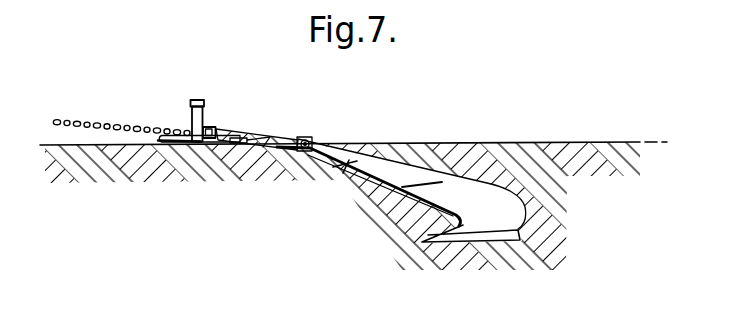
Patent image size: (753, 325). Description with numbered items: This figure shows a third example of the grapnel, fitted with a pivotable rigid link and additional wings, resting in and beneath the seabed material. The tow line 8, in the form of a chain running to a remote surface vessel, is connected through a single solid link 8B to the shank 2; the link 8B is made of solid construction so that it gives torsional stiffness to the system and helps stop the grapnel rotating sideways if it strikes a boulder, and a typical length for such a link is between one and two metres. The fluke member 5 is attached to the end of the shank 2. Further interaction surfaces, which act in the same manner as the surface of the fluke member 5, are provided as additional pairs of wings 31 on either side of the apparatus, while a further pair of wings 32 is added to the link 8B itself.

The shank 2 is at (490, 190).
The fluke member 5 is at (495, 232).
The tow line 8 is at (108, 123).
The solid link 8B is at (239, 128).
The wings 31 is at (343, 173).
The wings 32 is at (268, 150).